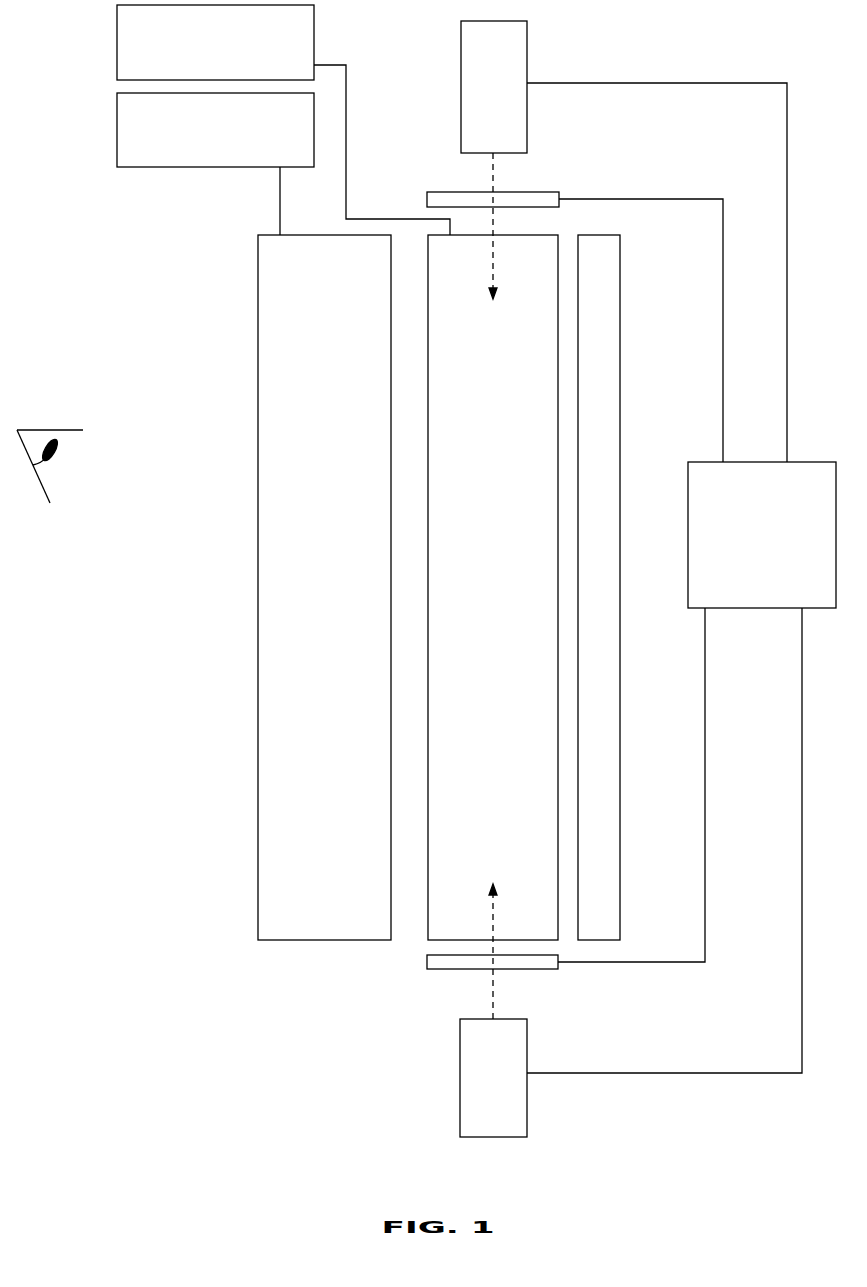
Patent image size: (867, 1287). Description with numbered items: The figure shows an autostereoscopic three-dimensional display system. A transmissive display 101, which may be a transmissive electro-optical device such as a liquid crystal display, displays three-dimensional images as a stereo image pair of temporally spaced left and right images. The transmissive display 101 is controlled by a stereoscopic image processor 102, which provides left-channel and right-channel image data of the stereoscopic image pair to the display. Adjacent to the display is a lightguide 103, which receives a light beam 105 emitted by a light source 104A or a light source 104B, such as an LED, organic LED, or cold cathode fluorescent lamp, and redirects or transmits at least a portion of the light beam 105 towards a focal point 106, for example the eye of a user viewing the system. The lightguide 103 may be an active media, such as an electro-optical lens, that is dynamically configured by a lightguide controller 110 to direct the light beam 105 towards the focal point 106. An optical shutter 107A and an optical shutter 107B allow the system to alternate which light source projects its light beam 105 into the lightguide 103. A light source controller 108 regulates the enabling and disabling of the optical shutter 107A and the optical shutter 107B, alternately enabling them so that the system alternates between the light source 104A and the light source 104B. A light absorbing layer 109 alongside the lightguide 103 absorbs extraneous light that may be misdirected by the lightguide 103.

The transmissive display 101 is at (324, 587).
The stereoscopic image processor 102 is at (215, 164).
The lightguide 103 is at (493, 587).
The light source 104A is at (631, 872).
The light source 104B is at (624, 241).
The light beam 105 is at (358, 1085).
The focal point 106 is at (44, 400).
The optical shutter 107A is at (523, 962).
The optical shutter 107B is at (545, 205).
The light source controller 108 is at (762, 535).
The light absorbing layer 109 is at (599, 587).
The lightguide controller 110 is at (283, 120).